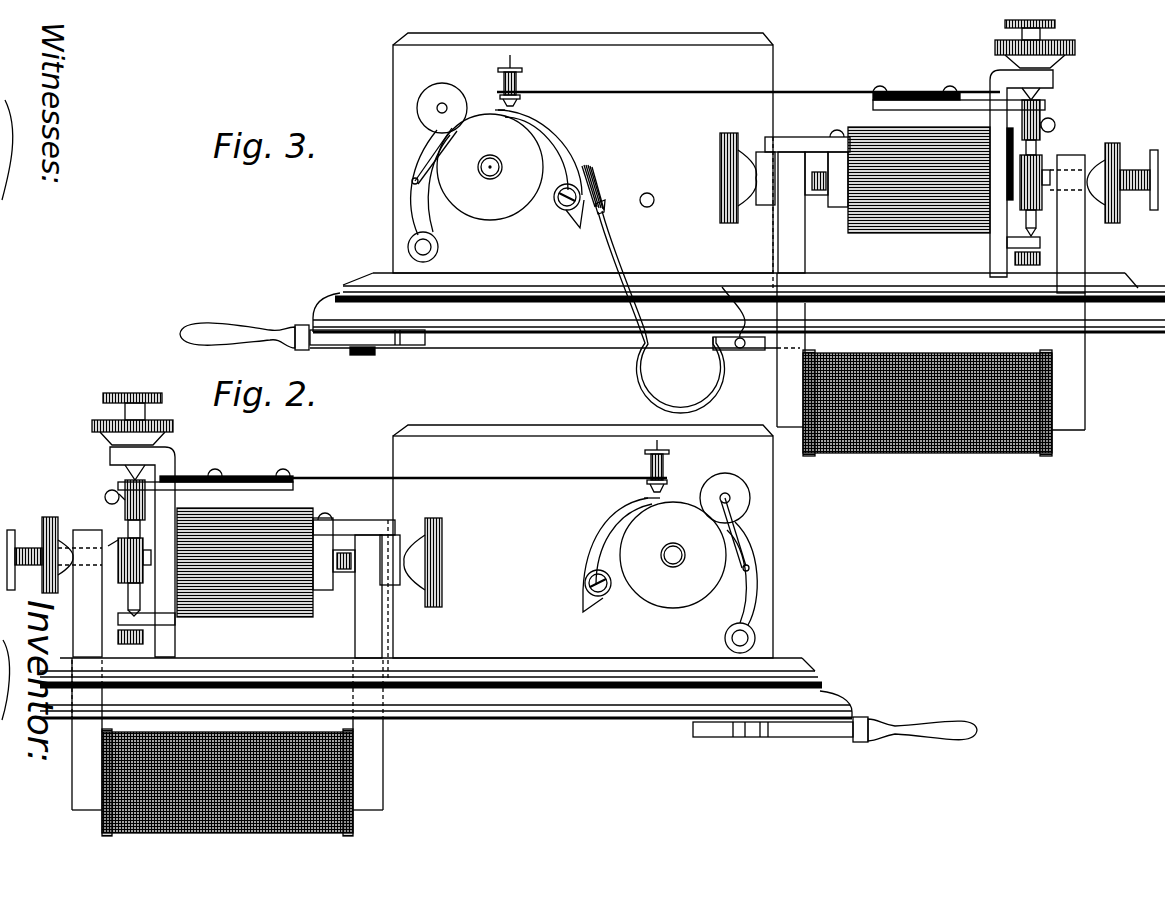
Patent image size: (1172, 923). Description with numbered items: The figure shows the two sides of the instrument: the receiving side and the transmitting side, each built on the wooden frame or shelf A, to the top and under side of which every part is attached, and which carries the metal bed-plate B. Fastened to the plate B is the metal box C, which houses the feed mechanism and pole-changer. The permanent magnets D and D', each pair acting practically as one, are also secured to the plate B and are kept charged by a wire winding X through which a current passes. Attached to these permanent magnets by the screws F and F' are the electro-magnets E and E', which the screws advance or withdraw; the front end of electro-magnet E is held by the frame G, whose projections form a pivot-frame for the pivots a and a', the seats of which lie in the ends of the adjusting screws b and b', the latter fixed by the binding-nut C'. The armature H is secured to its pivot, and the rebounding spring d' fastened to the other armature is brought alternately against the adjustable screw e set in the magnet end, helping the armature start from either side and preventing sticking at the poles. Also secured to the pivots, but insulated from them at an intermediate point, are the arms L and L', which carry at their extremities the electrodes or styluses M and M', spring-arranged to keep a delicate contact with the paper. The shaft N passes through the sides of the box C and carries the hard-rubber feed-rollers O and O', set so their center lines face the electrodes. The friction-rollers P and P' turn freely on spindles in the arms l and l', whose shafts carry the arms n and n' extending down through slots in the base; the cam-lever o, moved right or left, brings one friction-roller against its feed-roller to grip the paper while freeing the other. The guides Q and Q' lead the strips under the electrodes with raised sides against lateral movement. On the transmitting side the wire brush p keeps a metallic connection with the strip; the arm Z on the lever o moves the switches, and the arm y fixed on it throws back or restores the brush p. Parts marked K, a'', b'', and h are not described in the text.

In FIG. 3, the frame or shelf A is at (739, 351).
In FIG. 2, the frame or shelf A is at (446, 734).
In FIG. 3, the bed-plate B is at (583, 153).
In FIG. 2, the bed-plate B is at (583, 541).
In FIG. 3, the metal box C is at (1042, 156).
In FIG. 2, the metal box C is at (514, 532).
In FIG. 2, the binding-nut C' is at (121, 537).
In FIG. 3, the permanent magnet D is at (925, 211).
In FIG. 2, the permanent magnet D' is at (80, 593).
In FIG. 3, the electro-magnet E is at (919, 193).
In FIG. 2, the electro-magnet E' is at (245, 562).
In FIG. 3, the screw F is at (734, 211).
In FIG. 2, the screw F' is at (392, 596).
In FIG. 3, the frame G is at (999, 164).
In FIG. 2, the armature H is at (130, 577).
In FIG. 3, the nut K is at (1038, 191).
In FIG. 3, the arm L is at (771, 89).
In FIG. 2, the arm L' is at (392, 468).
In FIG. 3, the electrode or stylus M is at (526, 76).
In FIG. 2, the electrode or stylus M' is at (674, 466).
In FIG. 3, the shaft N is at (490, 167).
In FIG. 2, the shaft N is at (673, 555).
In FIG. 3, the feed-roller O is at (499, 175).
In FIG. 2, the feed-roller O' is at (662, 560).
In FIG. 3, the friction-roller P is at (434, 104).
In FIG. 2, the friction-roller P' is at (728, 485).
In FIG. 3, the guide Q is at (539, 169).
In FIG. 2, the guide Q' is at (610, 555).
In FIG. 3, the wire winding X is at (927, 412).
In FIG. 2, the wire winding X is at (238, 782).
In FIG. 3, the arm Z is at (555, 360).
In FIG. 3, the pivot a is at (1038, 162).
In FIG. 2, the pivot a' is at (124, 501).
In FIG. 2, the screw stop a'' is at (158, 544).
In FIG. 3, the screw b is at (1021, 143).
In FIG. 2, the screw b' is at (132, 394).
In FIG. 2, the nut b'' is at (139, 631).
In FIG. 2, the rebounding spring d' is at (62, 555).
In FIG. 3, the screw e is at (1122, 183).
In FIG. 3, the hole h is at (650, 190).
In FIG. 3, the arm l is at (423, 196).
In FIG. 2, the arm l' is at (739, 587).
In FIG. 3, the arm n is at (434, 156).
In FIG. 2, the arm n' is at (730, 534).
In FIG. 3, the cam-lever o is at (302, 339).
In FIG. 2, the cam-lever o is at (835, 729).
In FIG. 3, the wire brush p is at (610, 208).
In FIG. 3, the arm y is at (677, 312).